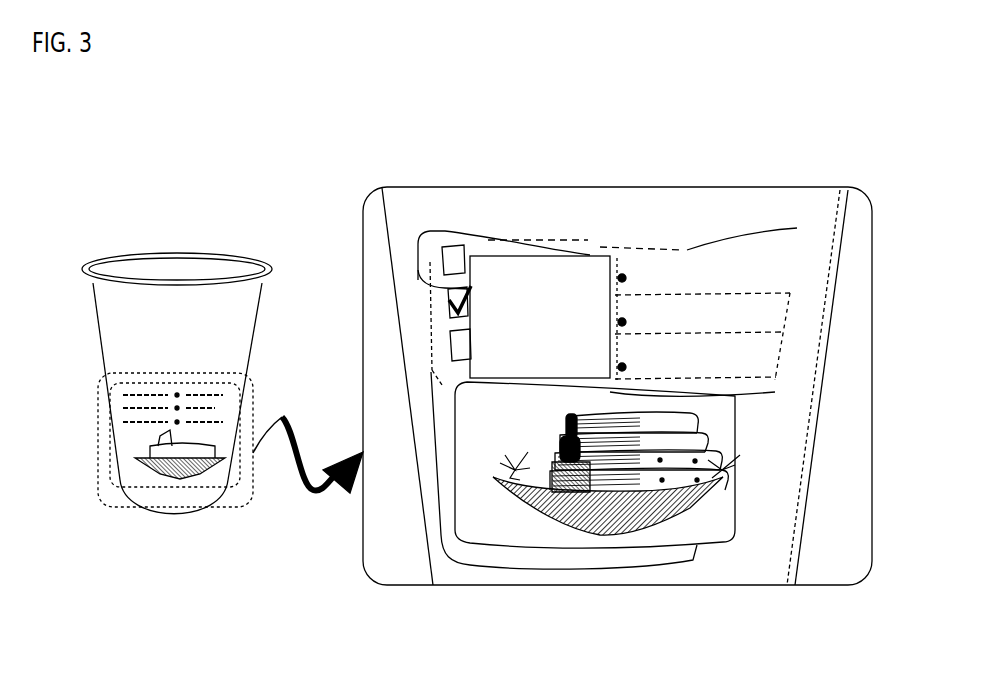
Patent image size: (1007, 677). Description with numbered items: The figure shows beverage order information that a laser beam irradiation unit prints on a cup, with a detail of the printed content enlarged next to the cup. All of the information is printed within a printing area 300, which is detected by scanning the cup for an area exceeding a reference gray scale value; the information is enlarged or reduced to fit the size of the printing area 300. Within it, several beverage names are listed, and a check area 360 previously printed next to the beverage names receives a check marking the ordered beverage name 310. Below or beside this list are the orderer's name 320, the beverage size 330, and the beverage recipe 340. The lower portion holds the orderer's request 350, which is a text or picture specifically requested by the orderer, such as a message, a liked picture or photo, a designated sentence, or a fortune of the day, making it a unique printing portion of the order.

The printing area 300 is at (523, 560).
The ordered beverage name 310 is at (503, 240).
The orderer's name 320 is at (812, 262).
The beverage size 330 is at (787, 315).
The beverage recipe 340 is at (787, 363).
The orderer's request 350 is at (697, 562).
The check area 360 is at (423, 280).